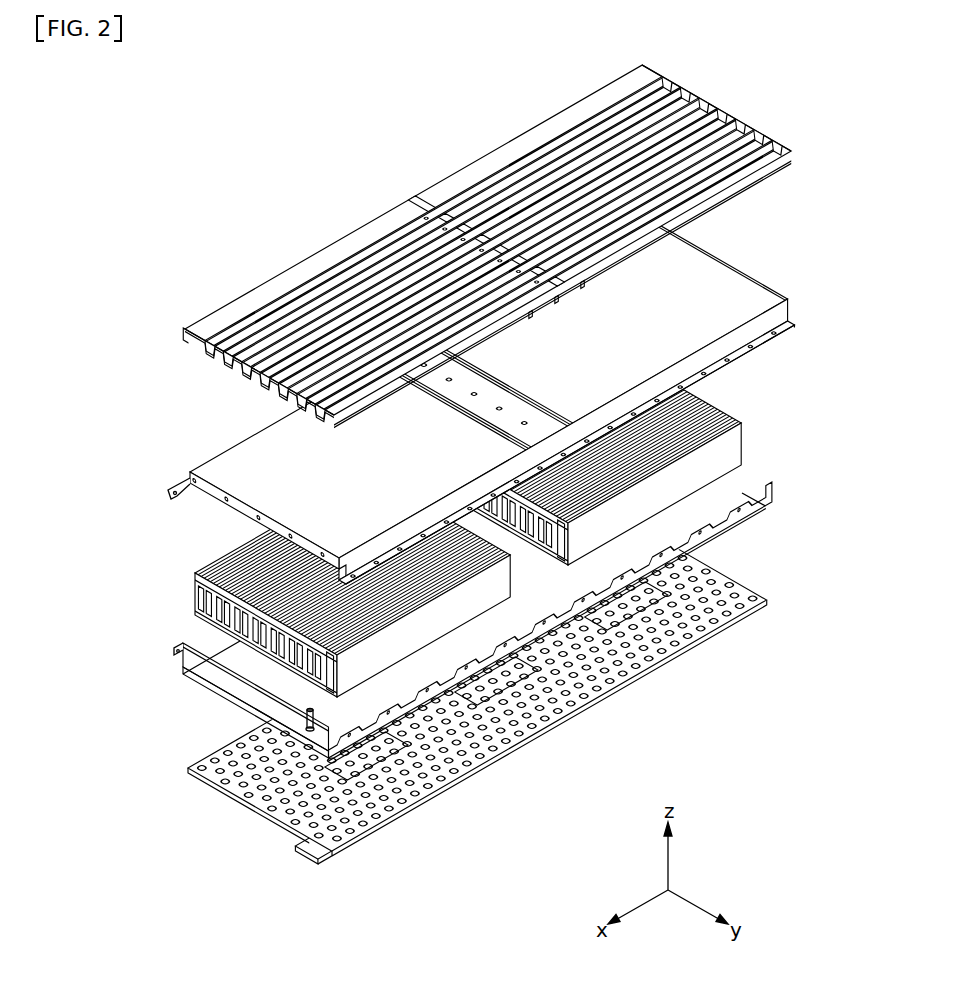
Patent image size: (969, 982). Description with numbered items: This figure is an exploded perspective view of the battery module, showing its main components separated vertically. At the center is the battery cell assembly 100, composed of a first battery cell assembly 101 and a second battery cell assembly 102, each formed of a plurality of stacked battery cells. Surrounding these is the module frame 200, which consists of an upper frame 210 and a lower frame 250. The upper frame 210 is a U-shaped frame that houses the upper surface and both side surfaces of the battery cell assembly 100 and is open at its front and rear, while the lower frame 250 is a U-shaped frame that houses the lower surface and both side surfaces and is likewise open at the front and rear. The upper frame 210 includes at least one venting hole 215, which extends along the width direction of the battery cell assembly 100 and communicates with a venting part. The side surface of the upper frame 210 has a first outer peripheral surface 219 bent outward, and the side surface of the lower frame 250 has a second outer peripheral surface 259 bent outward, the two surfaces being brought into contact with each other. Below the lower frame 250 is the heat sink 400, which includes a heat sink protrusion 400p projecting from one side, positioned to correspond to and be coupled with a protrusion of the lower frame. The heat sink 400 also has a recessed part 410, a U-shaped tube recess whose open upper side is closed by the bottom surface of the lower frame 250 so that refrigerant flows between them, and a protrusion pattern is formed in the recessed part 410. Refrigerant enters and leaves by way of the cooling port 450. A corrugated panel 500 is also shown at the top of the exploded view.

The battery cell assembly 100 is at (498, 606).
The first battery cell assembly 101 is at (196, 578).
The second battery cell assembly 102 is at (730, 450).
The module frame 200 is at (499, 516).
The upper frame 210 is at (491, 444).
The venting hole 215 is at (480, 417).
The first outer peripheral surface 219 is at (770, 333).
The lower frame 250 is at (500, 651).
The second outer peripheral surface 259 is at (770, 507).
The heat sink 400 is at (477, 710).
The heat sink protrusion 400p is at (323, 855).
The recessed part 410 is at (407, 797).
The cooling port 450 is at (272, 733).
The corrugated top panel 500 is at (218, 320).